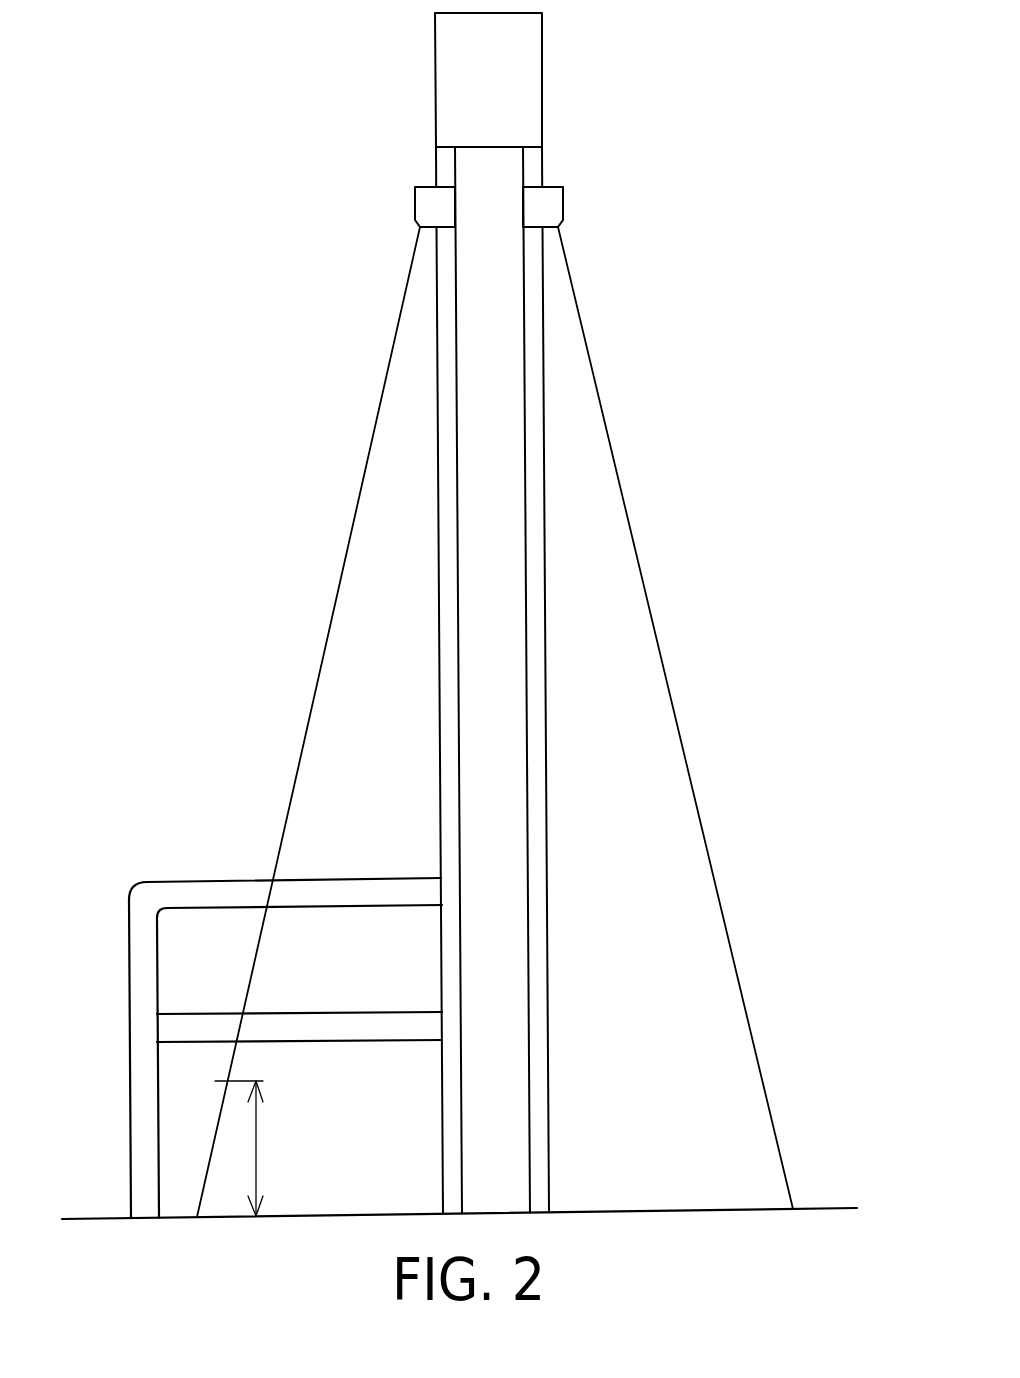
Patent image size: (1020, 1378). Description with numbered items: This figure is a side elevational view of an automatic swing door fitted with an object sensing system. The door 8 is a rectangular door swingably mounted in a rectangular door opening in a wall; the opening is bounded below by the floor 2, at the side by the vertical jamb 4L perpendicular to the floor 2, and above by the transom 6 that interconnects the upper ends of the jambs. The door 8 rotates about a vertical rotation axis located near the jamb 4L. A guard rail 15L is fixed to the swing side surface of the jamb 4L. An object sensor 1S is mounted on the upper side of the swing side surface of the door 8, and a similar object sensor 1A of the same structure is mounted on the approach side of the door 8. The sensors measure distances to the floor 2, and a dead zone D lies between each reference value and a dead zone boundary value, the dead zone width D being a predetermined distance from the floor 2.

The floor 2 is at (685, 1209).
The transom 6 is at (510, 80).
The door 8 is at (487, 442).
The jamb 4L is at (533, 170).
The object sensor 1S is at (422, 208).
The object sensor 1A is at (550, 208).
The guard rail 15L is at (220, 890).
The dead zone D is at (254, 1148).